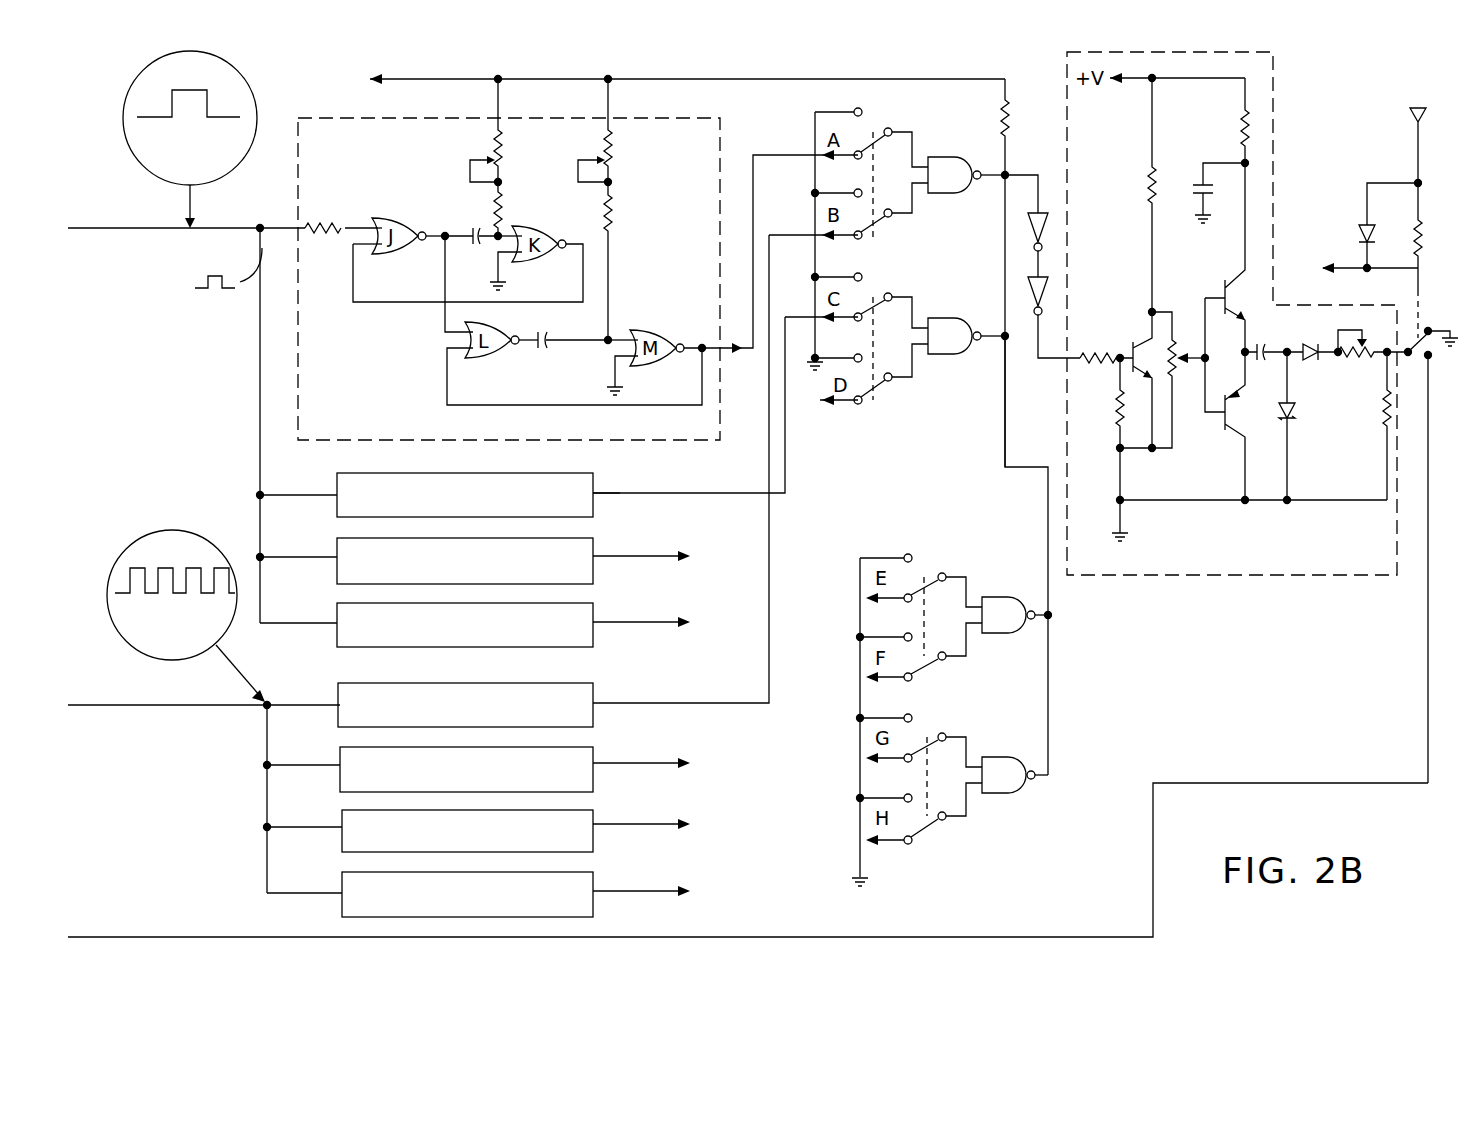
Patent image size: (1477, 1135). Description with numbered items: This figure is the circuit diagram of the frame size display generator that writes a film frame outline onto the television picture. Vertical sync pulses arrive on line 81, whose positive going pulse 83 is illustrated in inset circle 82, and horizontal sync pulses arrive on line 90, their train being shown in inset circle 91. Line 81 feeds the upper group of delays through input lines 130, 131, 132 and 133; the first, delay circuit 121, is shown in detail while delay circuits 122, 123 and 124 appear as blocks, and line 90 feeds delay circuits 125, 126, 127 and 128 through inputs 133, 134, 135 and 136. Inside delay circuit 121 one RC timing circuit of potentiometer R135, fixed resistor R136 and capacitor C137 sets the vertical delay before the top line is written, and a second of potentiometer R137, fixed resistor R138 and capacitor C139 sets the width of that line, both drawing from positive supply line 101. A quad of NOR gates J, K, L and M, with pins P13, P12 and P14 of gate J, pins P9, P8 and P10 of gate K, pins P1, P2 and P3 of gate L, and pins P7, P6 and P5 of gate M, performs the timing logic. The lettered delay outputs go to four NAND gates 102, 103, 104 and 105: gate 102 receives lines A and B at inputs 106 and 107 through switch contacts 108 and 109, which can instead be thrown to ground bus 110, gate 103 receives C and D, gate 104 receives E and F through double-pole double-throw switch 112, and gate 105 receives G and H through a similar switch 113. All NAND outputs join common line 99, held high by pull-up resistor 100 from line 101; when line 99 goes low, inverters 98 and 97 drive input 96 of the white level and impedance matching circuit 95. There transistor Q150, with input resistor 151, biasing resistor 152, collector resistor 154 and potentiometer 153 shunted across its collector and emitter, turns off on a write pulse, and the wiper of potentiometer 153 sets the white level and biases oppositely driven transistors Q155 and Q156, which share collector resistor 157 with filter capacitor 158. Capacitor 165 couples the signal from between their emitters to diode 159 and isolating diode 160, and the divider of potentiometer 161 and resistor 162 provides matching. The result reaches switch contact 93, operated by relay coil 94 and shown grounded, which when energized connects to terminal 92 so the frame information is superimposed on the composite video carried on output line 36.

The output line 36 is at (128, 935).
The output line 81 is at (122, 228).
The inset circle 82 is at (255, 90).
The vertical sync pulse 83 is at (201, 424).
The line 90 is at (115, 708).
The inset circle 91 is at (180, 532).
The terminal 92 is at (1430, 358).
The switch contact 93 is at (1412, 340).
The relay coil 94 is at (1425, 232).
The white video level and impedance matching circuit 95 is at (1275, 90).
The input terminal 96 is at (1040, 360).
The inverter 97 is at (1052, 268).
The inverter 98 is at (1052, 200).
The common line 99 is at (1000, 395).
The pull-up resistor 100 is at (1012, 124).
The line 101 is at (543, 79).
The NAND gate 102 is at (947, 157).
The NAND gate 103 is at (943, 320).
The NAND gate 104 is at (1003, 597).
The NAND gate 105 is at (1010, 795).
The input 106 is at (904, 128).
The input 107 is at (922, 205).
The switch contact 108 is at (872, 125).
The switch contact 109 is at (877, 232).
The ground bus 110 is at (828, 108).
The double-pole double-throw switch 112 is at (948, 675).
The ganged switch 113 is at (934, 835).
The delay circuit 121 is at (688, 440).
The delay circuit 122 is at (593, 505).
The delay circuit 123 is at (593, 569).
The delay circuit 124 is at (593, 633).
The delay circuit 125 is at (593, 716).
The delay circuit 126 is at (593, 778).
The delay circuit 127 is at (593, 838).
The delay circuit 128 is at (593, 905).
The input line 130 is at (310, 222).
The input line 131 is at (297, 492).
The input line 132 is at (302, 555).
The input line 133 is at (292, 622).
The input 134 is at (298, 763).
The input 135 is at (300, 826).
The input 136 is at (300, 892).
The input resistor 151 is at (1098, 352).
The biasing resistor 152 is at (1117, 410).
The potentiometer resistor 153 is at (1175, 330).
The resistor 154 is at (1156, 178).
The collector resistor 157 is at (1241, 128).
The filter capacitor 158 is at (1198, 192).
The diode 159 is at (1290, 422).
The isolating diode 160 is at (1303, 360).
The potentiometer 161 is at (1350, 330).
The resistor 162 is at (1382, 413).
The capacitor 165 is at (1264, 350).
The transistor Q150 is at (1140, 330).
The transistor Q155 is at (1243, 272).
The transistor Q156 is at (1238, 432).
The variable potentiometer R135 is at (492, 158).
The fixed resistor R136 is at (504, 198).
The variable potentiometer R137 is at (603, 152).
The fixed resistor R138 is at (612, 210).
The capacitor C137 is at (472, 222).
The capacitor C139 is at (560, 322).
The input pin P1 is at (445, 326).
The input pin P2 is at (456, 355).
The output pin P3 is at (518, 346).
The output pin P5 is at (682, 340).
The gate pin P6 is at (632, 372).
The input pin P7 is at (630, 336).
The output pin P8 is at (565, 240).
The input pin P9 is at (508, 232).
The gate pin P10 is at (508, 272).
The input pin P12 is at (358, 246).
The input pin P13 is at (374, 225).
The output pin P14 is at (428, 242).